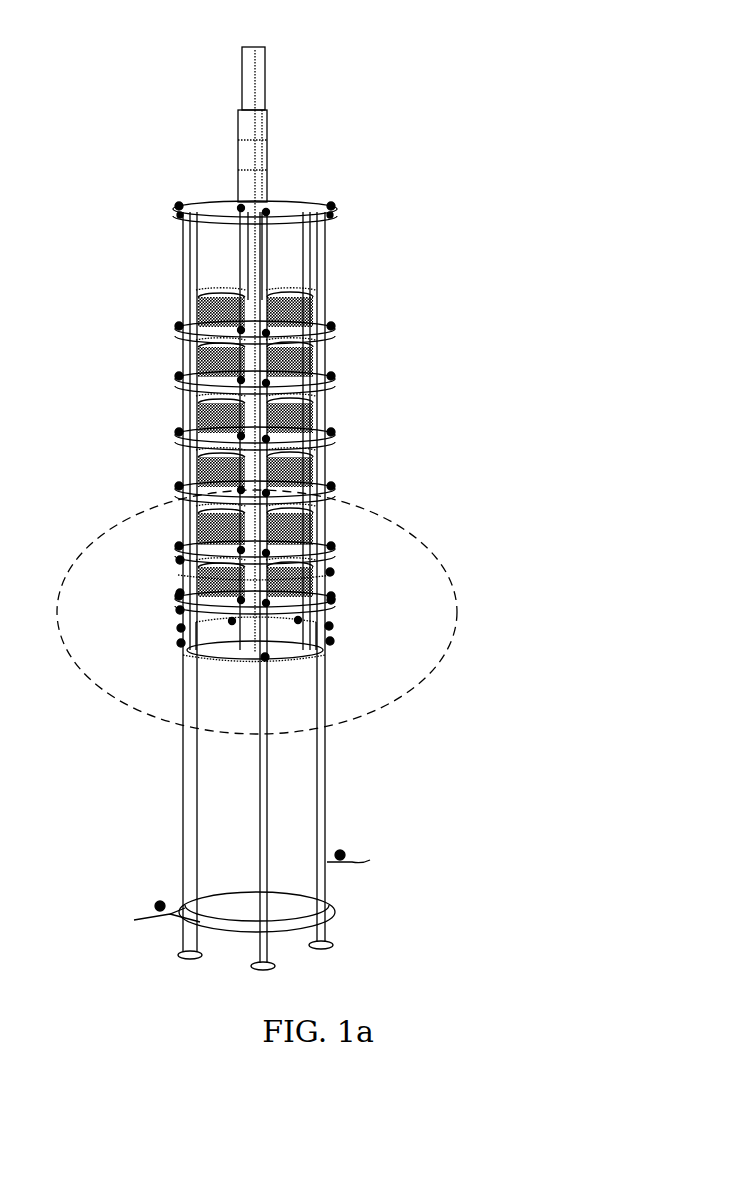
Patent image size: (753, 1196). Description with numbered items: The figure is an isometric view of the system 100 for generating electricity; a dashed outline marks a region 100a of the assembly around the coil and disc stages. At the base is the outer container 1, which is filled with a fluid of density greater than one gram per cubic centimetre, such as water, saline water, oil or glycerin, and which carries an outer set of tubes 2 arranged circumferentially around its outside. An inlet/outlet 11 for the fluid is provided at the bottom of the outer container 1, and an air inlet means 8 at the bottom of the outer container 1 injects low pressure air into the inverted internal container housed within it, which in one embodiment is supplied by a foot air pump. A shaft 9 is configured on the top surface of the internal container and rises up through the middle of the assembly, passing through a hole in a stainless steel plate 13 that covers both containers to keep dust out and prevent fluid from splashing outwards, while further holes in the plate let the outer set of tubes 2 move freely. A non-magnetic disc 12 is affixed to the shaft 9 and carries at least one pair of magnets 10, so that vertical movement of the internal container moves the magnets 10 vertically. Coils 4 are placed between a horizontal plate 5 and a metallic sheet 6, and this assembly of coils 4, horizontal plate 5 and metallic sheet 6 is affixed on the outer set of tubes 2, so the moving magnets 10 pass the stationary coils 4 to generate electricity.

The system 100 is at (334, 112).
The enlarged detail portion 100a is at (375, 510).
The shaft 9 is at (240, 243).
The non-magnetic disc 12 is at (225, 563).
The magnets 10 is at (180, 567).
The metallic sheet 6 is at (327, 570).
The coil 4 is at (330, 600).
The horizontal plate 5 is at (328, 638).
The stainless steel plate 13 is at (228, 652).
The outer set of tubes 2 is at (324, 713).
The outer container 1 is at (300, 760).
The inlet/outlet 11 is at (348, 860).
The air inlet means 8 is at (158, 904).